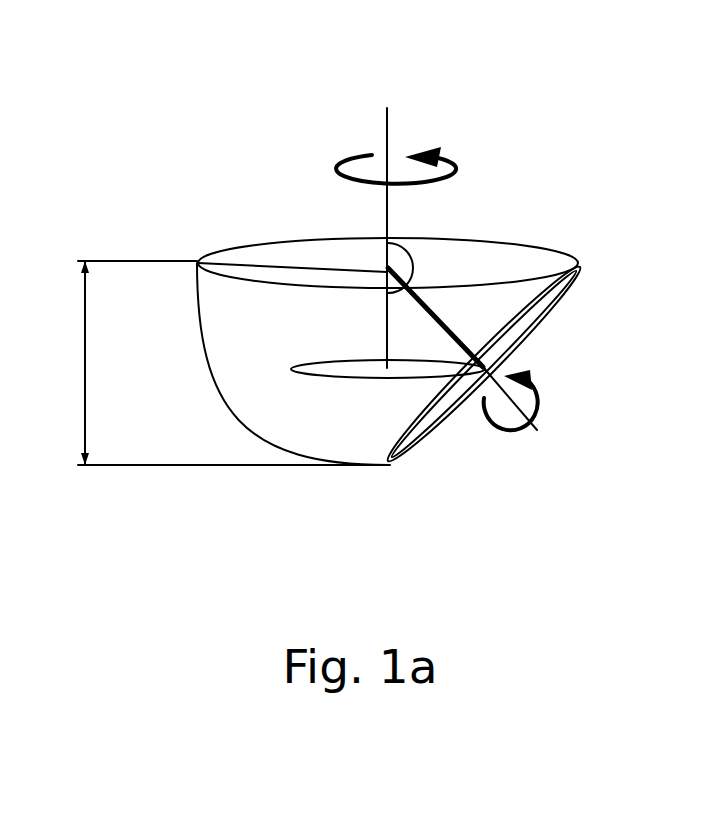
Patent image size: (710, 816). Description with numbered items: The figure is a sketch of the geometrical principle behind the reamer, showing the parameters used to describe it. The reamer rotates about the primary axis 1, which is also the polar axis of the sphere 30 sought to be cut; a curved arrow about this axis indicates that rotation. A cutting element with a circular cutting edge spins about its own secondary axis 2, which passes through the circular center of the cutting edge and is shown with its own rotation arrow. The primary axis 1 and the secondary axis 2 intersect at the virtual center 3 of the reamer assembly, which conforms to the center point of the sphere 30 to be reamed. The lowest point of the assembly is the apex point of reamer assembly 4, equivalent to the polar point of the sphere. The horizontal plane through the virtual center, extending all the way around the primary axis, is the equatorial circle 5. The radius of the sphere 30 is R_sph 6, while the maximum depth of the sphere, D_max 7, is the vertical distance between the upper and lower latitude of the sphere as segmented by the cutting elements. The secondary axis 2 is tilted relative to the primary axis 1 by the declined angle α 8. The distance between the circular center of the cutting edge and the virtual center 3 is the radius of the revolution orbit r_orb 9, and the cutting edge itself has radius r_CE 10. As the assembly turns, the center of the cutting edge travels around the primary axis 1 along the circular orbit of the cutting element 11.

The primary axis 1 is at (418, 212).
The secondary axis 2 is at (551, 457).
The virtual center 3 is at (318, 225).
The apex point of reamer assembly 4 is at (434, 507).
The equatorial circle 5 is at (388, 197).
The radius of the sphere 6 is at (253, 227).
The maximum depth of the sphere 7 is at (234, 363).
The declined angle 8 is at (494, 196).
The radius of the revolution orbit 9 is at (524, 295).
The radius of the circular cutting edge 10 is at (516, 364).
The circular orbit of the cutting element 11 is at (361, 440).
The sphere 30 is at (251, 392).